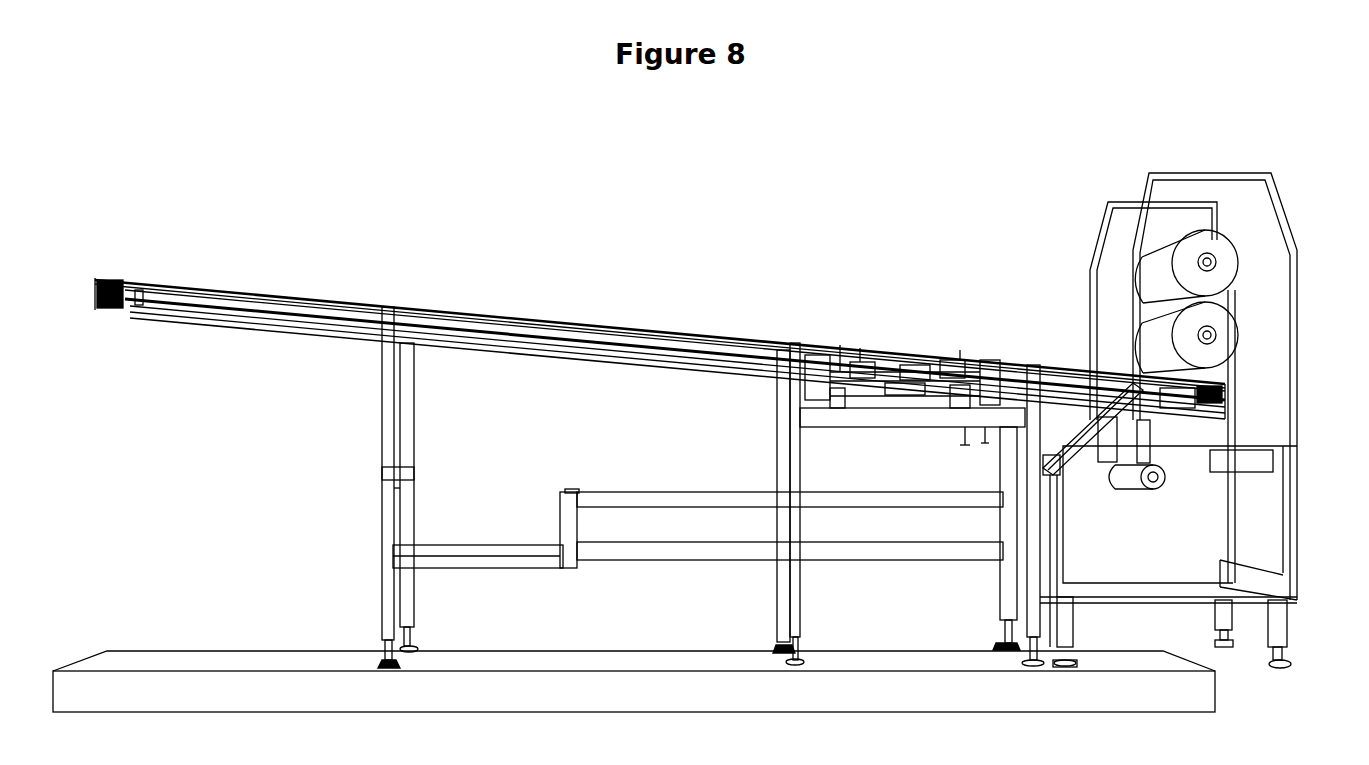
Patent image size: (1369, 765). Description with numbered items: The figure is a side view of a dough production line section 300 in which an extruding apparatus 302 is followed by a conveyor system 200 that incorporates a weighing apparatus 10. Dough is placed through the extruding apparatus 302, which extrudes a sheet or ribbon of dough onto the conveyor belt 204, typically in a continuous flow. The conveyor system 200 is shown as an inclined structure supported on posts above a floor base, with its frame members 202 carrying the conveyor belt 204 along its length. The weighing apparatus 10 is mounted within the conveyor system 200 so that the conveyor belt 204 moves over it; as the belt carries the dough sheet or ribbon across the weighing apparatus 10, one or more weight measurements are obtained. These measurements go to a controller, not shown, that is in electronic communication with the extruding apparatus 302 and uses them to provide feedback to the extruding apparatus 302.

The dough production line section 300 is at (406, 152).
The conveyor system 200 is at (1032, 367).
The conveyor 202 is at (278, 310).
The conveyor belt 204 is at (210, 290).
The weighing apparatus 10 is at (917, 360).
The extruding apparatus 302 is at (1217, 250).